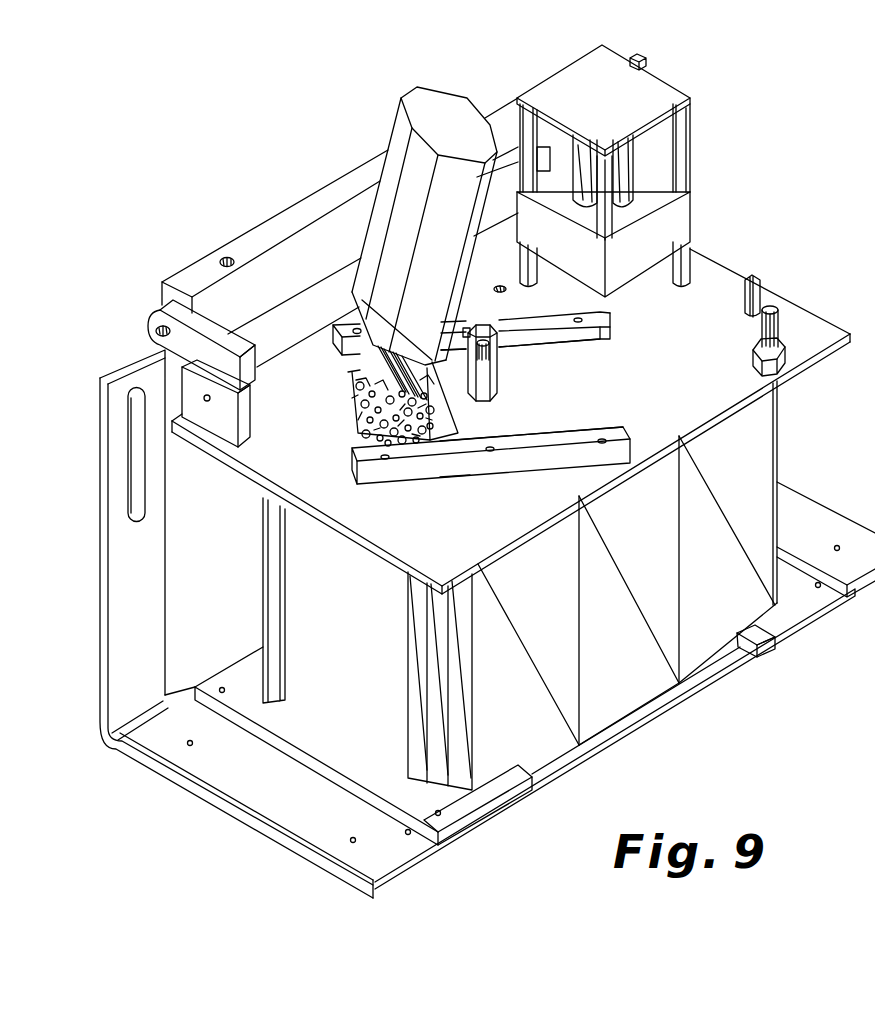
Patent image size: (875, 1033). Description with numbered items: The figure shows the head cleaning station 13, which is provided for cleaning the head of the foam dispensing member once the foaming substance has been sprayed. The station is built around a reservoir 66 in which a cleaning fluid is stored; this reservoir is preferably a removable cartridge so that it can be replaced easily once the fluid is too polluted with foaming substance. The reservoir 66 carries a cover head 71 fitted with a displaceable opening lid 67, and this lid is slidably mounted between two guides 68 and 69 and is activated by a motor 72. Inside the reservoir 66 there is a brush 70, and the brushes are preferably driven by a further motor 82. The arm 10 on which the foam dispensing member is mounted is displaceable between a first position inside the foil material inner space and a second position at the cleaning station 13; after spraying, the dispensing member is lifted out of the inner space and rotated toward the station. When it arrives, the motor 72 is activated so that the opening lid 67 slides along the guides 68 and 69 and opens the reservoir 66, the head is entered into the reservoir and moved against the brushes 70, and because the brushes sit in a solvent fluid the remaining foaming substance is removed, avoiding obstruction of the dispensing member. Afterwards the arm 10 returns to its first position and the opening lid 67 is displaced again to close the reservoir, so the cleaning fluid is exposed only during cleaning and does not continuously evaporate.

The arm 10 is at (450, 127).
The head cleaning station 13 is at (783, 285).
The reservoir 66 is at (652, 537).
The opening lid 67 is at (593, 424).
The guide 68 is at (603, 326).
The guide 69 is at (620, 437).
The brush 70 is at (348, 417).
The cover head 71 is at (455, 484).
The motor 72 is at (500, 355).
The motor 82 is at (694, 147).